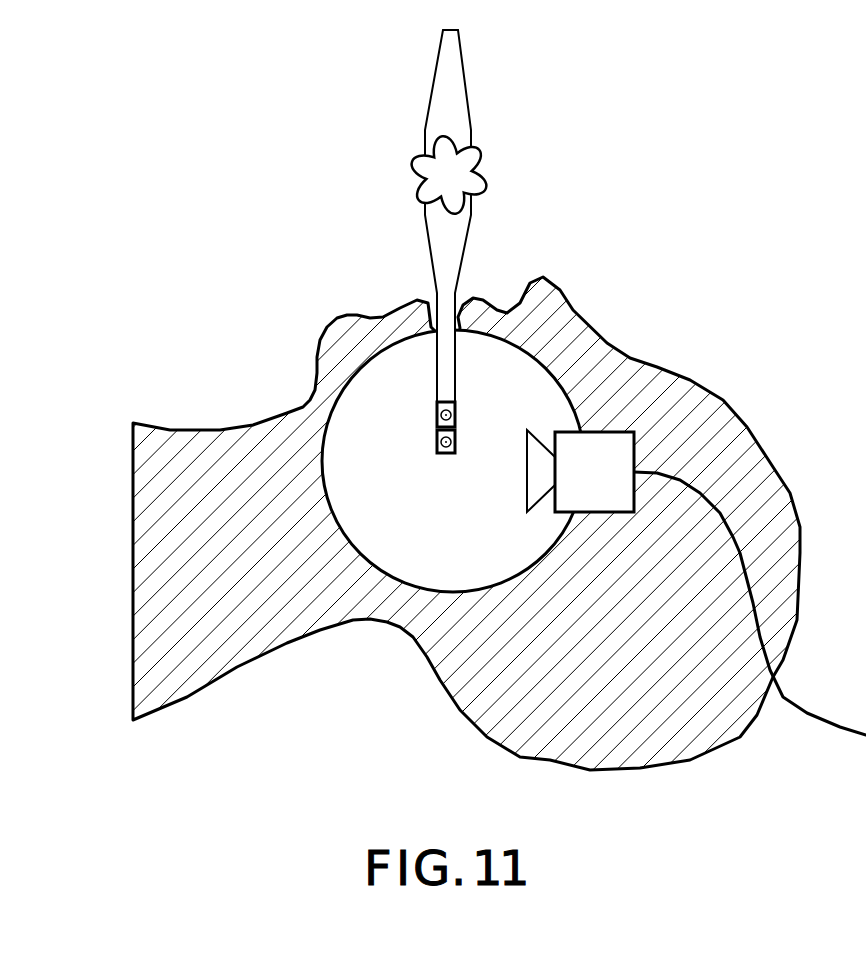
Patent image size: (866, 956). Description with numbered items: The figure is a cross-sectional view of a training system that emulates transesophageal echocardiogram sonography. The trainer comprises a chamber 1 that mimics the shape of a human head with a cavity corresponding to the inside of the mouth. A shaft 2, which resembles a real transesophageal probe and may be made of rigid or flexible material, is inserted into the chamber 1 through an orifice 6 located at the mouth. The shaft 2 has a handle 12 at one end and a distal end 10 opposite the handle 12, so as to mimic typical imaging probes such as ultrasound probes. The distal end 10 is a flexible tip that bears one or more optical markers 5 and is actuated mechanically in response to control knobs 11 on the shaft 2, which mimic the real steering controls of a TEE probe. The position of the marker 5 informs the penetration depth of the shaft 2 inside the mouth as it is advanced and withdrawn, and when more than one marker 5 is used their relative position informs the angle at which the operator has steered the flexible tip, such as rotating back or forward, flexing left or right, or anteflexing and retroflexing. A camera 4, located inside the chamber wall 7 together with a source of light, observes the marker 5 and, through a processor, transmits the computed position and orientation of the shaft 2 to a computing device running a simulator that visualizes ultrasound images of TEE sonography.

The chamber 1 is at (631, 360).
The shaft 2 is at (453, 67).
The camera 4 is at (620, 447).
The marker 5 is at (447, 453).
The orifice 6 is at (432, 300).
The chamber wall 7 is at (338, 511).
The distal end 10 is at (457, 430).
The control knobs 11 is at (463, 182).
The handle 12 is at (462, 106).